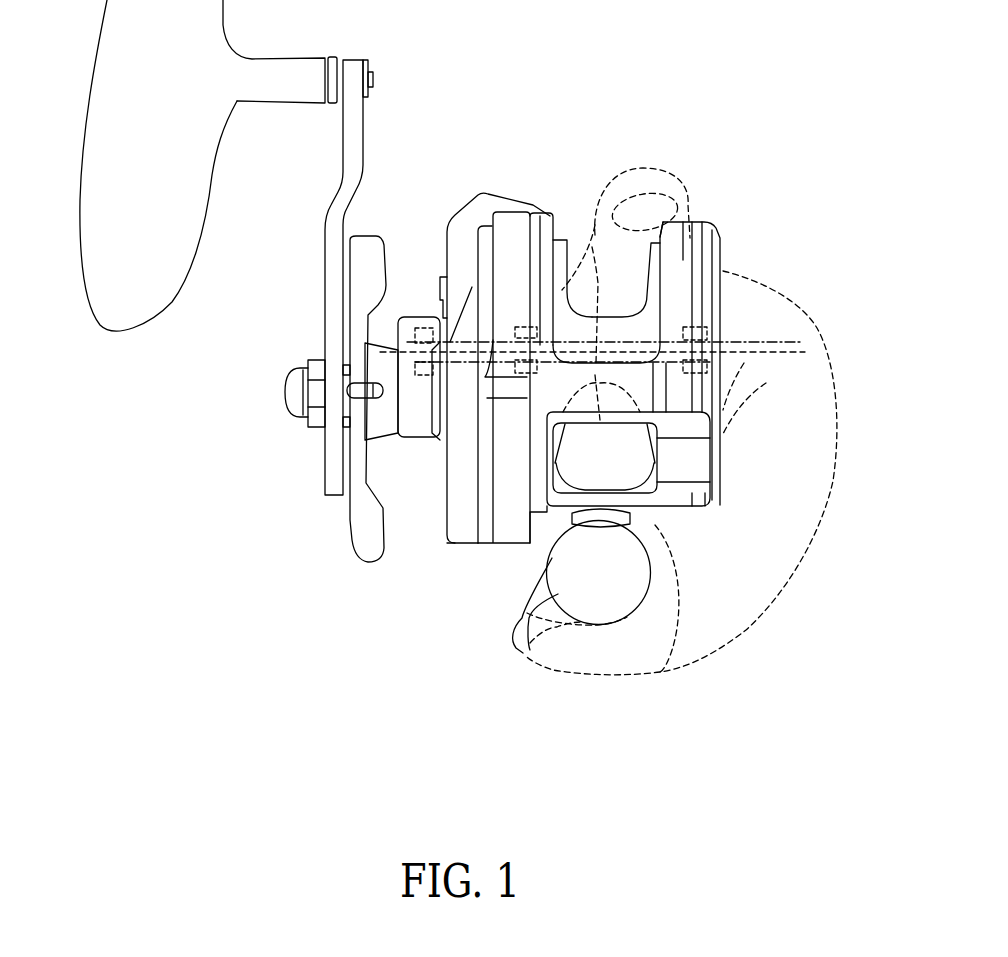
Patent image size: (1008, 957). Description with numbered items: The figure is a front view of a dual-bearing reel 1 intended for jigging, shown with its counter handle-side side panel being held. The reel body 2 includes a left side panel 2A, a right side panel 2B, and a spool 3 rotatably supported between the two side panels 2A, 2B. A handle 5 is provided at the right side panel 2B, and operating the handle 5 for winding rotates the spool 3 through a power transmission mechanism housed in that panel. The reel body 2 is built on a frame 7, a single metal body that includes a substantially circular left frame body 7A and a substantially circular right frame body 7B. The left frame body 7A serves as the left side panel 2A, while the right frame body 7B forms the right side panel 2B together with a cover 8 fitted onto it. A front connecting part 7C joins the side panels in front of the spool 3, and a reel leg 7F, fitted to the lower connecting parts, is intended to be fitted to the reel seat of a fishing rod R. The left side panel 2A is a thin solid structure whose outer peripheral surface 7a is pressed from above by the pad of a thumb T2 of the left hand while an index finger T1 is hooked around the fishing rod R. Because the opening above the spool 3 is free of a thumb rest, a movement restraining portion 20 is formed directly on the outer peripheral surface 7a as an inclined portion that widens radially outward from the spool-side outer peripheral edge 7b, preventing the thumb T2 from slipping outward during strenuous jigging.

The dual-bearing reel 1 is at (696, 112).
The reel body 2 is at (510, 212).
The left side panel 2A is at (686, 236).
The right side panel 2B is at (462, 668).
The spool 3 is at (573, 262).
The handle 5 is at (353, 121).
The frame 7 is at (665, 432).
The left frame body 7A is at (684, 266).
The right frame body 7B is at (493, 533).
The front connecting part 7C is at (642, 380).
The reel leg 7F is at (645, 508).
The outer peripheral surface 7a is at (687, 220).
The spool-side outer peripheral edge 7b is at (657, 220).
The cover 8 is at (463, 533).
The movement restraining portion 20 is at (699, 212).
The fishing rod R is at (523, 653).
The index finger T1 is at (620, 677).
The thumb T2 is at (637, 167).